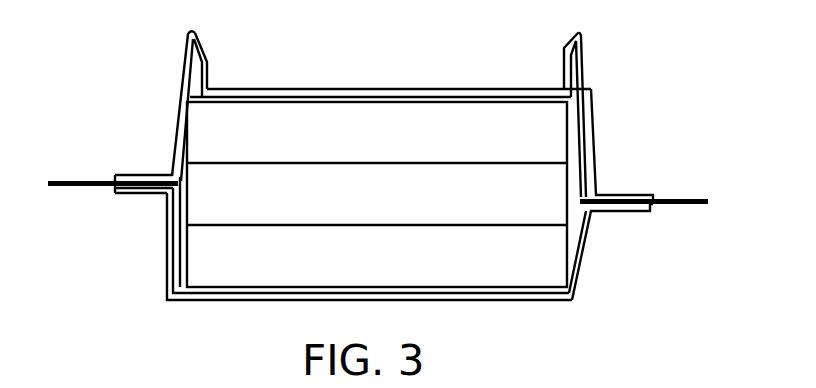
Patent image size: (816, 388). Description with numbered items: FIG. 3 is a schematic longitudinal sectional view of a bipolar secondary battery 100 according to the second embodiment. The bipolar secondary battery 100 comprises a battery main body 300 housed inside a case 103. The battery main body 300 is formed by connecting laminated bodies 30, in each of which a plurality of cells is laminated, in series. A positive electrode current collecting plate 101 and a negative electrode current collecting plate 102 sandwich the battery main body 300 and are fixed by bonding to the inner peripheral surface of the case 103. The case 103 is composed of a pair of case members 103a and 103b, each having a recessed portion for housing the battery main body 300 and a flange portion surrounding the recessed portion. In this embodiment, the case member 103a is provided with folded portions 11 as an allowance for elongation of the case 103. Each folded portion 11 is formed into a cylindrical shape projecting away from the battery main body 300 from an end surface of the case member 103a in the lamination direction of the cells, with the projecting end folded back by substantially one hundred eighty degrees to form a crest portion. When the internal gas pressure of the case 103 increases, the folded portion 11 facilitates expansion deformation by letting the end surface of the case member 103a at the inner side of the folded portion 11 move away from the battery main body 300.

The folded portion 11 is at (200, 45).
The laminated body 30 is at (520, 181).
The bipolar secondary battery 100 is at (610, 116).
The positive electrode current collecting plate 101 is at (680, 198).
The negative electrode current collecting plate 102 is at (67, 181).
The case 103 is at (307, 85).
The case member 103a is at (178, 100).
The case member 103b is at (167, 257).
The battery main body 300 is at (575, 172).